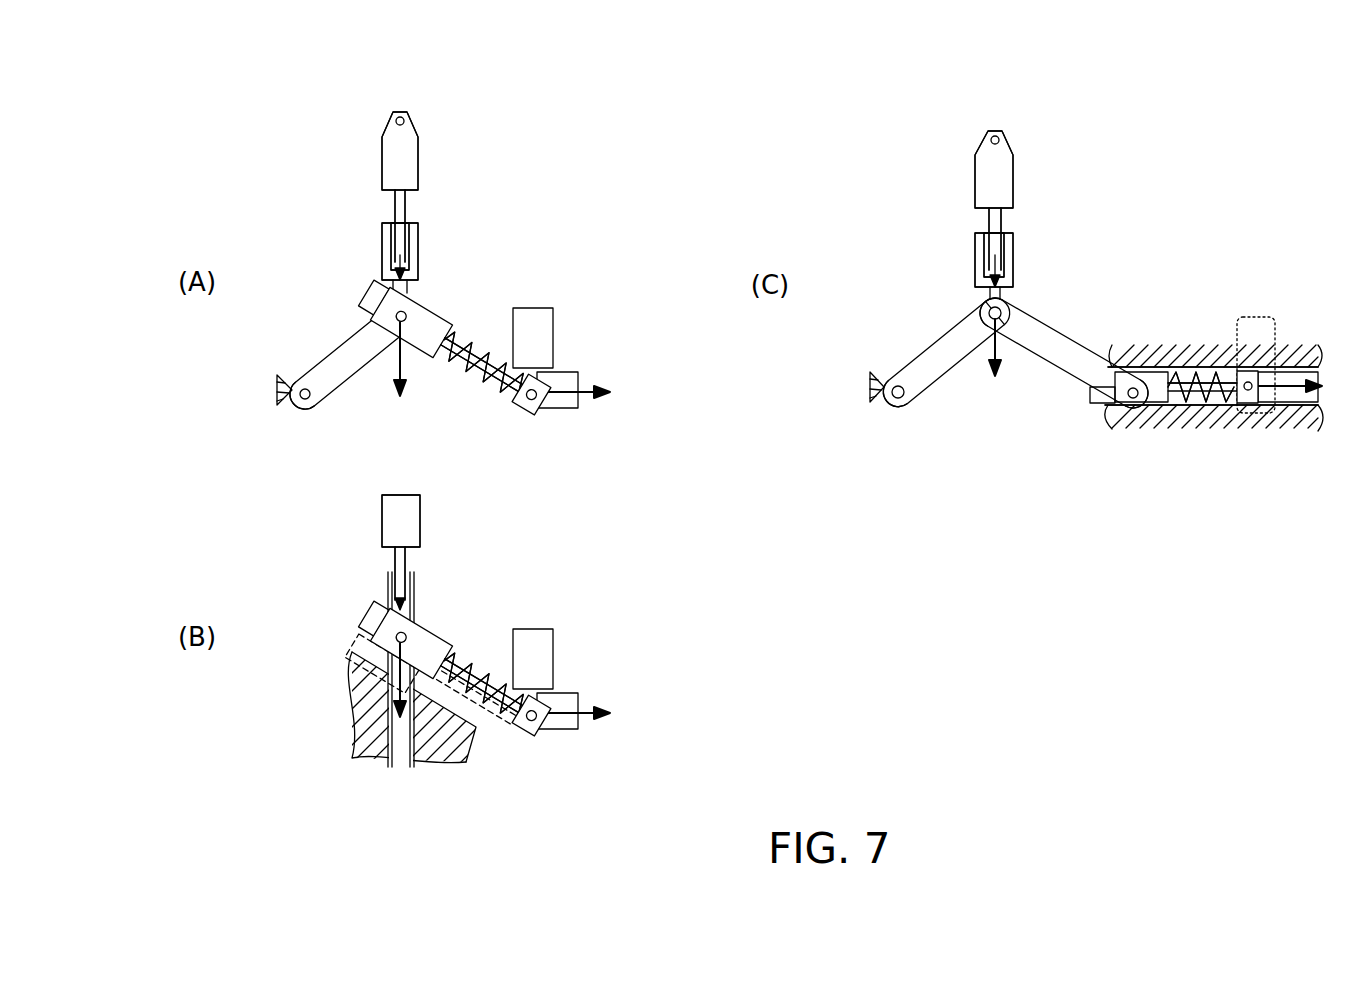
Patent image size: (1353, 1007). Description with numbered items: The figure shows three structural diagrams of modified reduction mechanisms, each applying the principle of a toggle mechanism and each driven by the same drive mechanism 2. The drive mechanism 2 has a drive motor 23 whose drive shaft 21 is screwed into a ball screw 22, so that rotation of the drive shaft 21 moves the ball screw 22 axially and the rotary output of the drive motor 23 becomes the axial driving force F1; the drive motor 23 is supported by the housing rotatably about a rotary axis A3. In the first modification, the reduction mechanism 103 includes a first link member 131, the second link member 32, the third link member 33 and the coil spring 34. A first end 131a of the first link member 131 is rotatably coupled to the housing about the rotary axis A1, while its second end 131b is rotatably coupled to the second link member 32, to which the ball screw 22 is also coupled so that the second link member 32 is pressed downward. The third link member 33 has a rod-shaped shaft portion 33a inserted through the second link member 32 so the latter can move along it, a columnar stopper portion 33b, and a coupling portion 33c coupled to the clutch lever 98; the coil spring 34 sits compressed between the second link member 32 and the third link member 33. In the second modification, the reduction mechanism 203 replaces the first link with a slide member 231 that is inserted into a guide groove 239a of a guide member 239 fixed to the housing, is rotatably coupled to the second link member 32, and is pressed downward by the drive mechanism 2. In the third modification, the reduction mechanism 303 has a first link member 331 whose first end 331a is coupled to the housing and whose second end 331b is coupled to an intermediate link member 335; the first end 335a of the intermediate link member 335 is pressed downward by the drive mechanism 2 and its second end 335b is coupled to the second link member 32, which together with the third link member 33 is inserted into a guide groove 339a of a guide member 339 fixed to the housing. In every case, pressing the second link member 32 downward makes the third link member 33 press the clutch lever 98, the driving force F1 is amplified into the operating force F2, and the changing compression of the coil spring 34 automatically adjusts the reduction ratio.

The drive mechanism 2 is at (494, 168).
The drive shaft 21 is at (400, 200).
The ball screw 22 is at (413, 244).
The drive motor 23 is at (412, 166).
The second link member 32 is at (418, 305).
The third link member 33 is at (548, 366).
The shaft portion 33a is at (458, 340).
The stopper portion 33b is at (372, 287).
The coupling portion 33c is at (527, 410).
The coil spring 34 is at (493, 340).
The clutch lever 98 is at (533, 309).
The reduction mechanism 103 is at (572, 215).
The first link member 131 is at (333, 360).
The first end 131a is at (300, 377).
The second end 131b is at (362, 304).
The reduction mechanism 203 is at (572, 578).
The slide member 231 is at (352, 658).
The guide member 239 is at (440, 752).
The guide groove 239a is at (400, 762).
The reduction mechanism 303 is at (1128, 192).
The first link member 331 is at (945, 352).
The first end 331a is at (928, 362).
The second end 331b is at (972, 330).
The intermediate link member 335 is at (1068, 350).
The first end 335a is at (1042, 345).
The second end 335b is at (1118, 405).
The guide member 339 is at (1192, 430).
The guide groove 339a is at (1315, 430).
The rotary axis A1 is at (305, 400).
The rotary axis A3 is at (402, 117).
The driving force F1 is at (388, 372).
The operating force F2 is at (585, 380).